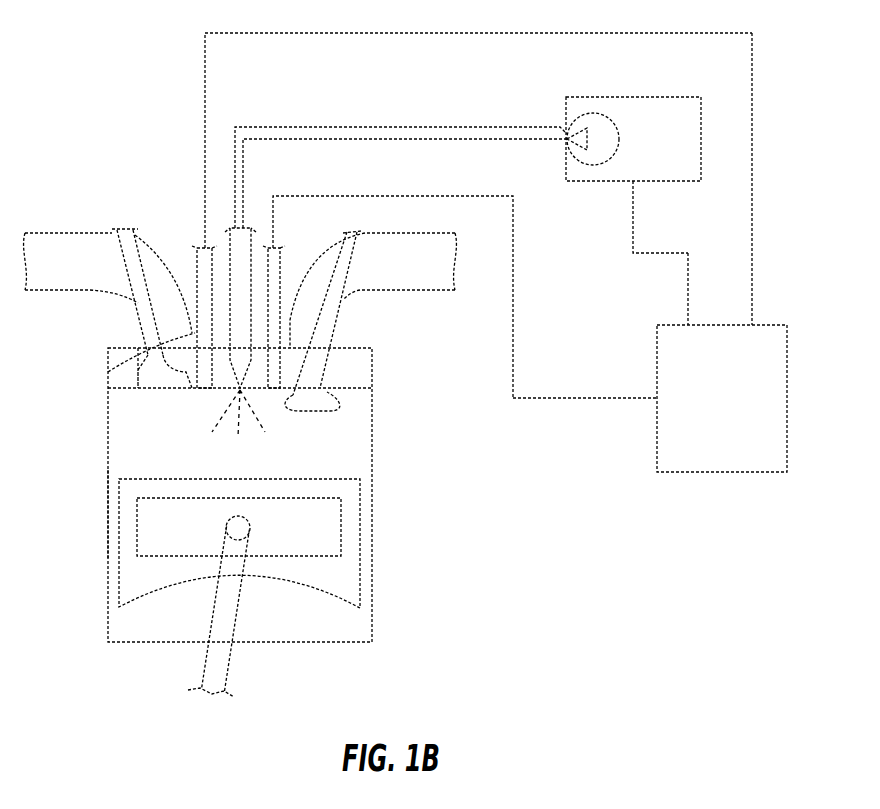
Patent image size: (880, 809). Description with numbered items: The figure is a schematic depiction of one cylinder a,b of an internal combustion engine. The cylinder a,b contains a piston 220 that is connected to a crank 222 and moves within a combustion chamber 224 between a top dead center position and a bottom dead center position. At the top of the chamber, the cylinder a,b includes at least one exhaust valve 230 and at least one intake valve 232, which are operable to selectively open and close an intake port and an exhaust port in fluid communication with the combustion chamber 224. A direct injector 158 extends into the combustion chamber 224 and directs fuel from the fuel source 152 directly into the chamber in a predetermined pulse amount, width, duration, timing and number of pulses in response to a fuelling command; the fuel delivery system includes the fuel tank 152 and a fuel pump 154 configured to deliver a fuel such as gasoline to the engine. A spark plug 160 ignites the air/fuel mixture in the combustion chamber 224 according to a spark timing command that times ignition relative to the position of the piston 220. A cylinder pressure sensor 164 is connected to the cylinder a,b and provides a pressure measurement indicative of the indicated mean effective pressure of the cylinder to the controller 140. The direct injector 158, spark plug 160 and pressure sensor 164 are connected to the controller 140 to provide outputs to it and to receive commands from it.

The controller 140 is at (788, 397).
The fuel tank 152 is at (632, 97).
The fuel pump 154 is at (593, 113).
The direct injector 158 is at (225, 233).
The spark plug 160 is at (108, 372).
The cylinder pressure sensor 164 is at (280, 262).
The piston 220 is at (360, 545).
The crank 222 is at (232, 663).
The combustion chamber 224 is at (357, 447).
The exhaust valve 230 is at (347, 303).
The intake valve 232 is at (138, 300).
The cylinders a,b is at (108, 515).